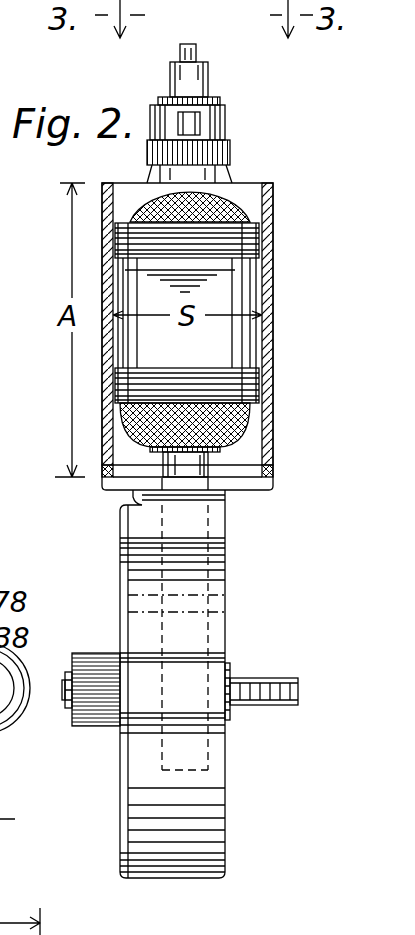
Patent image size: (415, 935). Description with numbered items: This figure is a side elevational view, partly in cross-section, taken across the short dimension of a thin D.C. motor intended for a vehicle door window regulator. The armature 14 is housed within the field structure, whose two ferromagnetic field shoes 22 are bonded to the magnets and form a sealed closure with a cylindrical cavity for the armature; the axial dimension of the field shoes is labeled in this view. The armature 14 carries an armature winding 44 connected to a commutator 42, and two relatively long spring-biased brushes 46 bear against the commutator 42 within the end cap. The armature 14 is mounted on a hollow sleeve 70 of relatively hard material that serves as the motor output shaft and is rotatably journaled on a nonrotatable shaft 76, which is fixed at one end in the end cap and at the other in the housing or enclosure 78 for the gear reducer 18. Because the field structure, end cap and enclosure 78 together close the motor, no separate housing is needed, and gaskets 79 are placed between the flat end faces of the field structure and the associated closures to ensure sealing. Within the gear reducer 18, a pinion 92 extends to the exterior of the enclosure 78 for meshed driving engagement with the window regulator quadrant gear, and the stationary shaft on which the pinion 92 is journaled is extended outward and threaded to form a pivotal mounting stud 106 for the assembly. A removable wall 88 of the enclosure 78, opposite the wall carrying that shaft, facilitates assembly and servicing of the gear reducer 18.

The armature 14 is at (245, 272).
The gear reducer 18 is at (244, 596).
The field shoes 22 is at (270, 360).
The commutator 42 is at (218, 113).
The armature winding 44 is at (239, 192).
The spring-biased brushes 46 is at (195, 125).
The hollow sleeve 70 is at (198, 76).
The nonrotatable shaft 76 is at (193, 50).
The housing or enclosure 78 is at (205, 812).
The gaskets 79 is at (266, 470).
The wall 88 is at (125, 823).
The pinion 92 is at (95, 720).
The pivotal mounting stud 106 is at (275, 703).